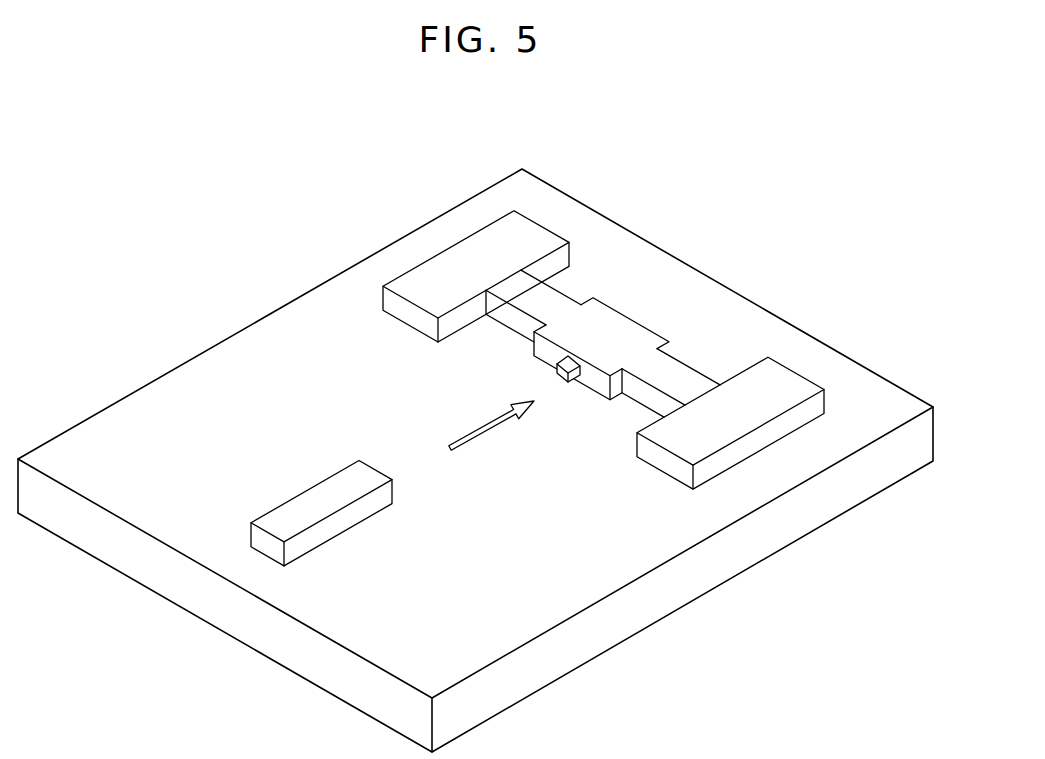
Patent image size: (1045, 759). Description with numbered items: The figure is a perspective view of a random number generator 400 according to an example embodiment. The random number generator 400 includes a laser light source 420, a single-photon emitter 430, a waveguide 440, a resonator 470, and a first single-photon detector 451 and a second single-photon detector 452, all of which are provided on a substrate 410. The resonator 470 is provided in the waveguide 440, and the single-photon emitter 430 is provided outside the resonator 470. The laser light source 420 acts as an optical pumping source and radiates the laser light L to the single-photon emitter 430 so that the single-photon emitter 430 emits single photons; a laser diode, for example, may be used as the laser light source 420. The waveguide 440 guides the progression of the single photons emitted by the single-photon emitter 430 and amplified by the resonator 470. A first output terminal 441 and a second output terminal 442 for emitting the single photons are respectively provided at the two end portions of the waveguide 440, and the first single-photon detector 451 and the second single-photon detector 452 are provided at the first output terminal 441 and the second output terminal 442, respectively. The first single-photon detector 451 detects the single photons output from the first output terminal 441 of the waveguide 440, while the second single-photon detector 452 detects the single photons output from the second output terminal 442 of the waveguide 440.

The random number generator 400 is at (790, 211).
The substrate 410 is at (677, 600).
The laser light source 420 is at (306, 492).
The single-photon emitter 430 is at (559, 384).
The waveguide 440 is at (610, 326).
The first output terminal 441 is at (499, 279).
The second output terminal 442 is at (702, 396).
The first single-photon detector 451 is at (540, 233).
The second single-photon detector 452 is at (793, 380).
The resonator 470 is at (631, 323).
The laser light L is at (477, 430).